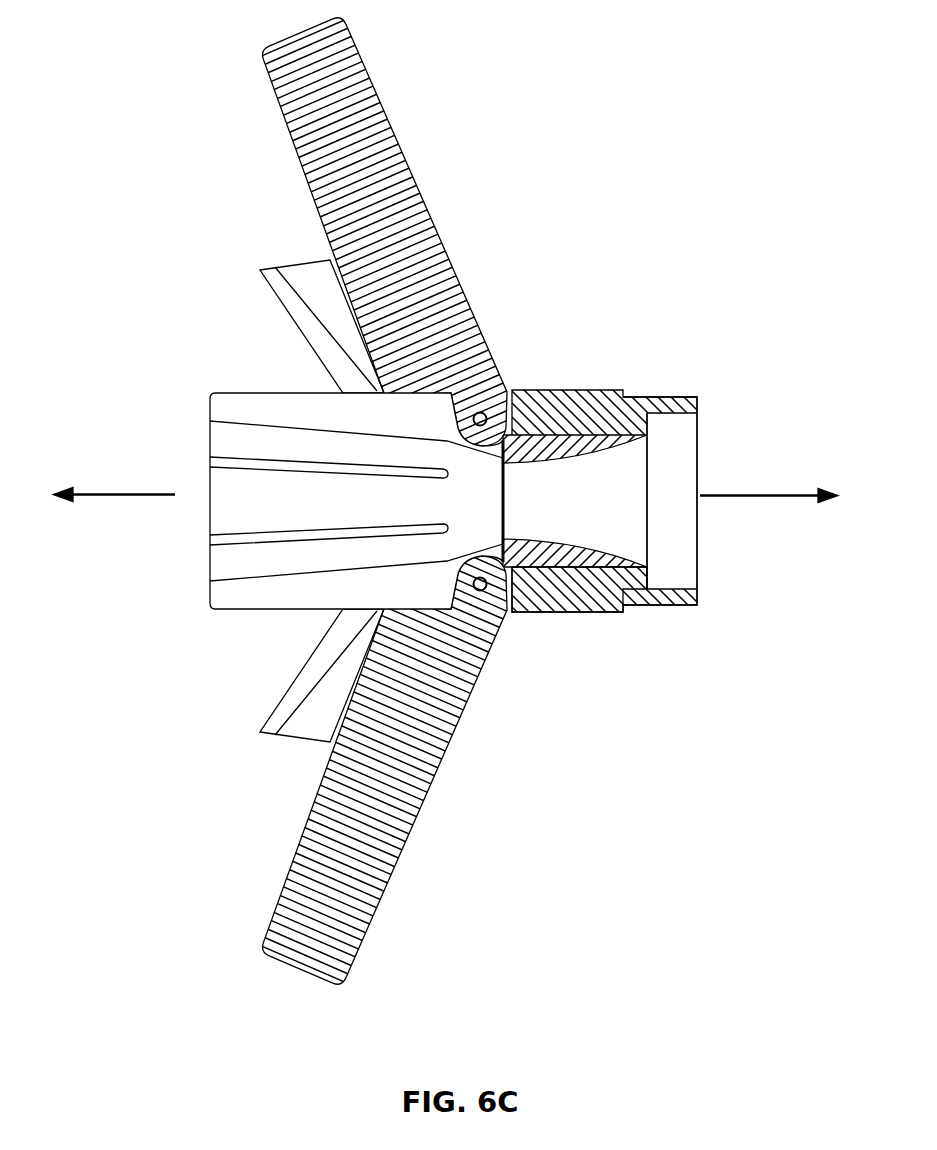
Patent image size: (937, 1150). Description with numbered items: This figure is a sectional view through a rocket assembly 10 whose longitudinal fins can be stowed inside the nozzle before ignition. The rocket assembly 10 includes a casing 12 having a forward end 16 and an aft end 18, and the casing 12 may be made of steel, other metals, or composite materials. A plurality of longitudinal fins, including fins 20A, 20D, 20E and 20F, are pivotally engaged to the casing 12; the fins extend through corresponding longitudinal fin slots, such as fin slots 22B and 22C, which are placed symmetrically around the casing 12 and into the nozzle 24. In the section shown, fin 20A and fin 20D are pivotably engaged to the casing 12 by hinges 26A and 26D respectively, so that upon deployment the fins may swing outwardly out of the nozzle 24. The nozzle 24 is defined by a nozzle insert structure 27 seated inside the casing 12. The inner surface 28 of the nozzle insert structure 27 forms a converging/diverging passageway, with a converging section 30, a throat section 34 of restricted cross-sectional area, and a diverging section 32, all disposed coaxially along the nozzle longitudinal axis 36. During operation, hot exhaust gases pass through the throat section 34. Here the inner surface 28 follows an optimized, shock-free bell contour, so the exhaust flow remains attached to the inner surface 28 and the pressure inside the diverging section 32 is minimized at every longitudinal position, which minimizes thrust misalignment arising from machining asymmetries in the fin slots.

The rocket assembly 10 is at (606, 155).
The casing 12 is at (613, 389).
The forward end 16 is at (697, 423).
The aft end 18 is at (210, 398).
The fin 20A is at (405, 163).
The fin 20D is at (421, 806).
The fin 20E is at (290, 681).
The fin 20F is at (287, 261).
The fin slot 22B is at (231, 461).
The fin slot 22C is at (247, 538).
The nozzle 24 is at (618, 513).
The hinge 26A is at (487, 412).
The hinge 26D is at (496, 591).
The nozzle insert structure 27 is at (575, 572).
The inner surface 28 is at (545, 540).
The converging section 30 is at (602, 490).
The diverging section 32 is at (453, 500).
The throat section 34 is at (521, 500).
The nozzle longitudinal axis 36 is at (89, 493).